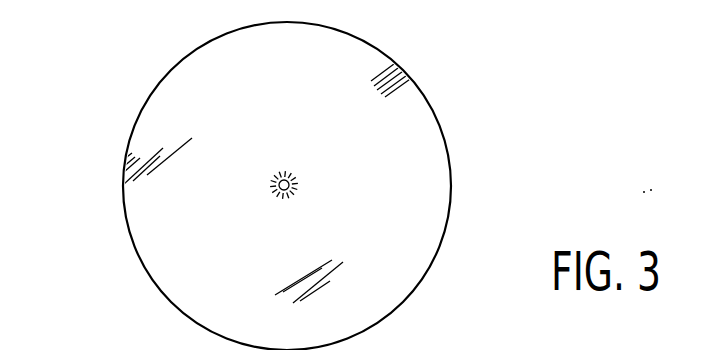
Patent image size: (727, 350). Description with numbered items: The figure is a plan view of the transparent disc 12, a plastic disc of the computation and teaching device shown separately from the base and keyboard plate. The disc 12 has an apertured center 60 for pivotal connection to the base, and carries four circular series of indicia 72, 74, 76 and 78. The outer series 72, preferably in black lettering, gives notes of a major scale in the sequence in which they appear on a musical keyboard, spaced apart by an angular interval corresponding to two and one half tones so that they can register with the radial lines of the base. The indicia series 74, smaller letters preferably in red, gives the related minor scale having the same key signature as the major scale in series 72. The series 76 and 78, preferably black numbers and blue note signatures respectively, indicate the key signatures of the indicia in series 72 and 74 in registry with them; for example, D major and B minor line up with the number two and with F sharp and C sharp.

The transparent disc 12 is at (458, 248).
The center 60 is at (290, 184).
The series of indicia 72 is at (378, 50).
The indicia series 74 is at (327, 125).
The series of indicia 76 is at (240, 167).
The series of indicia 78 is at (236, 180).